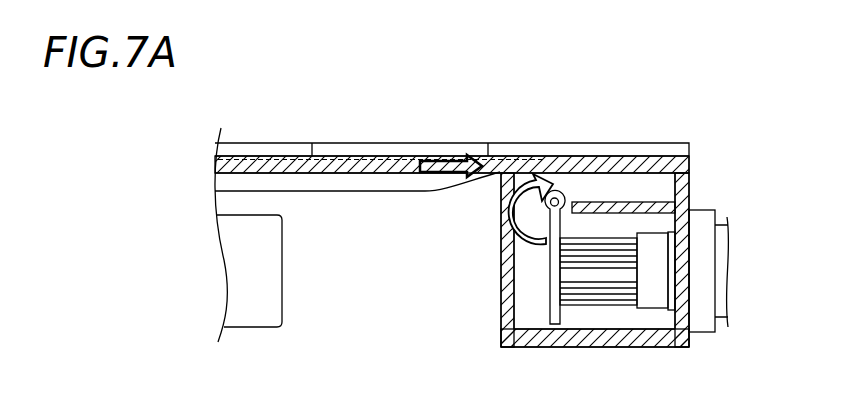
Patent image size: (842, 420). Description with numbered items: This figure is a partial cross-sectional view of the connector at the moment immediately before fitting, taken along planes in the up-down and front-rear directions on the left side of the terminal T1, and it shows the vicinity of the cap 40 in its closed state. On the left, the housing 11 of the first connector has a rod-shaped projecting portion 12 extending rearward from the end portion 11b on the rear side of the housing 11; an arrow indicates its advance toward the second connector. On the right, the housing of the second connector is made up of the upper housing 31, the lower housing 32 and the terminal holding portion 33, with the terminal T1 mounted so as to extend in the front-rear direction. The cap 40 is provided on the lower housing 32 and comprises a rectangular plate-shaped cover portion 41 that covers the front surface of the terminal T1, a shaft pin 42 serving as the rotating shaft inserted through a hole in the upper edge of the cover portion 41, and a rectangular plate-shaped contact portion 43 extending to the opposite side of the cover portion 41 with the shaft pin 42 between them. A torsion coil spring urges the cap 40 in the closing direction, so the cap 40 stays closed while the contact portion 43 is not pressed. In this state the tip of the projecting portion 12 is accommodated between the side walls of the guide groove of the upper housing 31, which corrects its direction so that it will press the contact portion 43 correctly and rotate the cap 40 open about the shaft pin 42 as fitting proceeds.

The housing 11 is at (255, 308).
The end portion 11b is at (282, 306).
The projecting portion 12 is at (378, 180).
The upper housing 31 is at (657, 143).
The lower housing 32 is at (633, 347).
The terminal holding portion 33 is at (703, 217).
The cap 40 is at (533, 198).
The cover portion 41 is at (555, 285).
The shaft pin 42 is at (560, 200).
The contact portion 43 is at (566, 192).
The terminal T1 is at (602, 260).